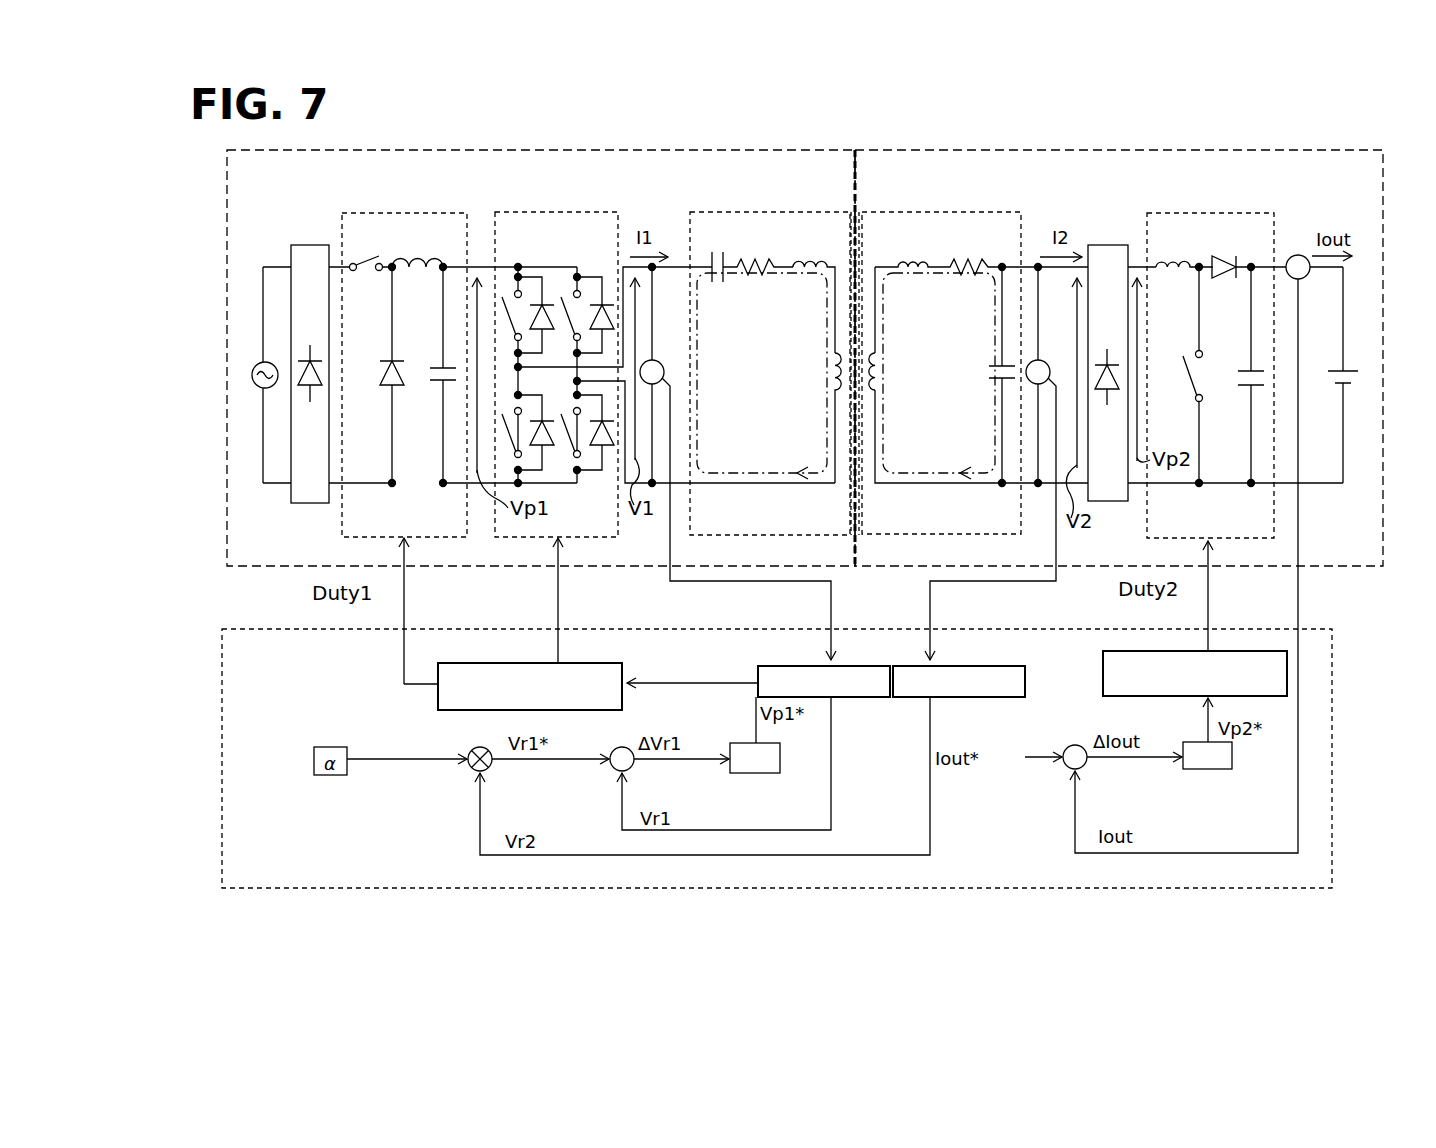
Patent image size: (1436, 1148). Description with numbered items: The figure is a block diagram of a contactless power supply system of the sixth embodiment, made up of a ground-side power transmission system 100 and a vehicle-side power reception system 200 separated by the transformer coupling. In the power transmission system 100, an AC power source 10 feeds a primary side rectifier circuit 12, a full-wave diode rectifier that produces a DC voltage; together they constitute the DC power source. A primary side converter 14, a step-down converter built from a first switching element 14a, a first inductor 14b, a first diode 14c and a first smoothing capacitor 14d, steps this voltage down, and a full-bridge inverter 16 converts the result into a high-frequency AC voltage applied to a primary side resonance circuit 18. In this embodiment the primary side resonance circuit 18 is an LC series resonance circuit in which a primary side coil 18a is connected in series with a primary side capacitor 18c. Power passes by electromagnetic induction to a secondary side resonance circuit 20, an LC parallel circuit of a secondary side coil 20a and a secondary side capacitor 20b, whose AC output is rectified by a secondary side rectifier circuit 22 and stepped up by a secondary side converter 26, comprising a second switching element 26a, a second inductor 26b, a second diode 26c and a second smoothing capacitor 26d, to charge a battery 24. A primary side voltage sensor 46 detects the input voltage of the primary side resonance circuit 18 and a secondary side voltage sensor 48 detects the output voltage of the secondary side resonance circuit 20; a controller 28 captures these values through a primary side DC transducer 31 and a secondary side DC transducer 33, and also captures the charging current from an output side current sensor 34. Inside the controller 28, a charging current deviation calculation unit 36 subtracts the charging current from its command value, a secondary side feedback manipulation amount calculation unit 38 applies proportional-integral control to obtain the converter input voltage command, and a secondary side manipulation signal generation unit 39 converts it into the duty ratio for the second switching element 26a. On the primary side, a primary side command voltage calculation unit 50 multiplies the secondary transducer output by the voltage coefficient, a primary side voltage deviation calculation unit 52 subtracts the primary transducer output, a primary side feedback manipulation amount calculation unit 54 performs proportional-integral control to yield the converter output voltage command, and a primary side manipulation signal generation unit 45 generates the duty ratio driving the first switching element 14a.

The AC power source 10 is at (256, 365).
The primary side rectifier circuit 12 is at (319, 245).
The primary side converter 14 is at (404, 346).
The first switching element 14a is at (360, 263).
The first inductor 14b is at (425, 263).
The first diode 14c is at (380, 360).
The first smoothing capacitor 14d is at (440, 362).
The full-bridge inverter 16 is at (600, 212).
The primary side resonance circuit 18 is at (770, 344).
The primary side coil 18a is at (833, 360).
The primary side capacitor 18c is at (722, 258).
The secondary side resonance circuit 20 is at (975, 343).
The secondary side coil 20a is at (876, 356).
The secondary side capacitor 20b is at (995, 365).
The secondary side rectifier circuit 22 is at (1114, 245).
The battery 24 is at (1350, 370).
The secondary side converter 26 is at (1210, 347).
The second switching element 26a is at (1186, 362).
The second inductor 26b is at (1172, 260).
The second diode 26c is at (1230, 258).
The second smoothing capacitor 26d is at (1246, 366).
The controller 28 is at (1312, 629).
The primary side DC transducer 31 is at (862, 666).
The secondary side DC transducer 33 is at (962, 666).
The output side current sensor 34 is at (1298, 255).
The charging current deviation calculation unit 36 is at (1075, 745).
The secondary side feedback manipulation amount calculation unit 38 is at (1222, 769).
The secondary side manipulation signal generation unit 39 is at (1225, 651).
The primary side manipulation signal generation unit 45 is at (605, 663).
The primary side voltage sensor 46 is at (661, 364).
The secondary side voltage sensor 48 is at (1046, 364).
The primary side command voltage calculation unit 50 is at (480, 747).
The primary side voltage deviation calculation unit 52 is at (622, 747).
The primary side feedback manipulation amount calculation unit 54 is at (772, 773).
The power transmission system 100 is at (818, 150).
The power reception system 200 is at (1345, 150).